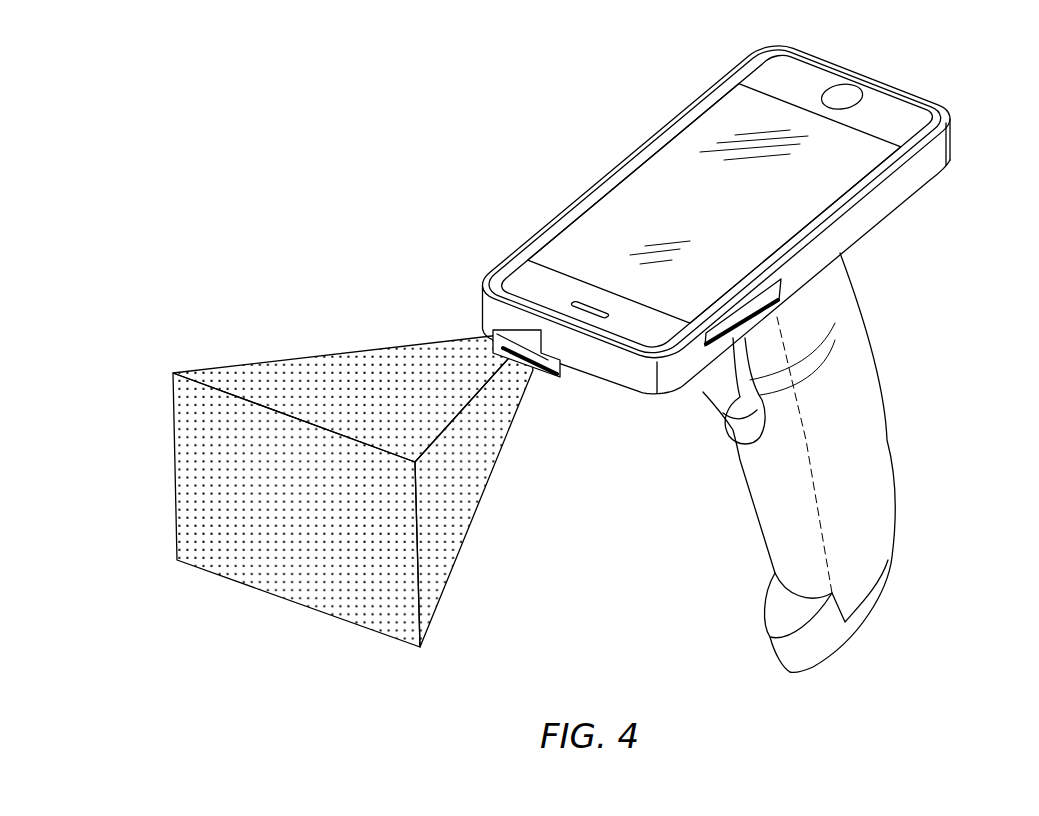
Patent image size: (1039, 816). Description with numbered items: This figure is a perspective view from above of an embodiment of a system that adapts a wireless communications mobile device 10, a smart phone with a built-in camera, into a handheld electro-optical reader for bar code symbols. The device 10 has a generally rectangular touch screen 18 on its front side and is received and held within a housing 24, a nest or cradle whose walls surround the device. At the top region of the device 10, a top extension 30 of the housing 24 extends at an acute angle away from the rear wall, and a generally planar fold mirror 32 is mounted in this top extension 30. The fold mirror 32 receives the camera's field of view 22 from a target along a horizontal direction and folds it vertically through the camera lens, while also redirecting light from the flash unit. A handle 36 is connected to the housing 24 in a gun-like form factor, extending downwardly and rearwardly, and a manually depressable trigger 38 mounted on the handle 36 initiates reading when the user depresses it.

The wireless communications mobile device 10 is at (760, 74).
The touch screen 18 is at (603, 210).
The field of view 22 is at (243, 367).
The housing 24 is at (946, 168).
The top extension 30 is at (560, 365).
The fold mirror 32 is at (547, 367).
The handle 36 is at (752, 505).
The trigger 38 is at (706, 385).